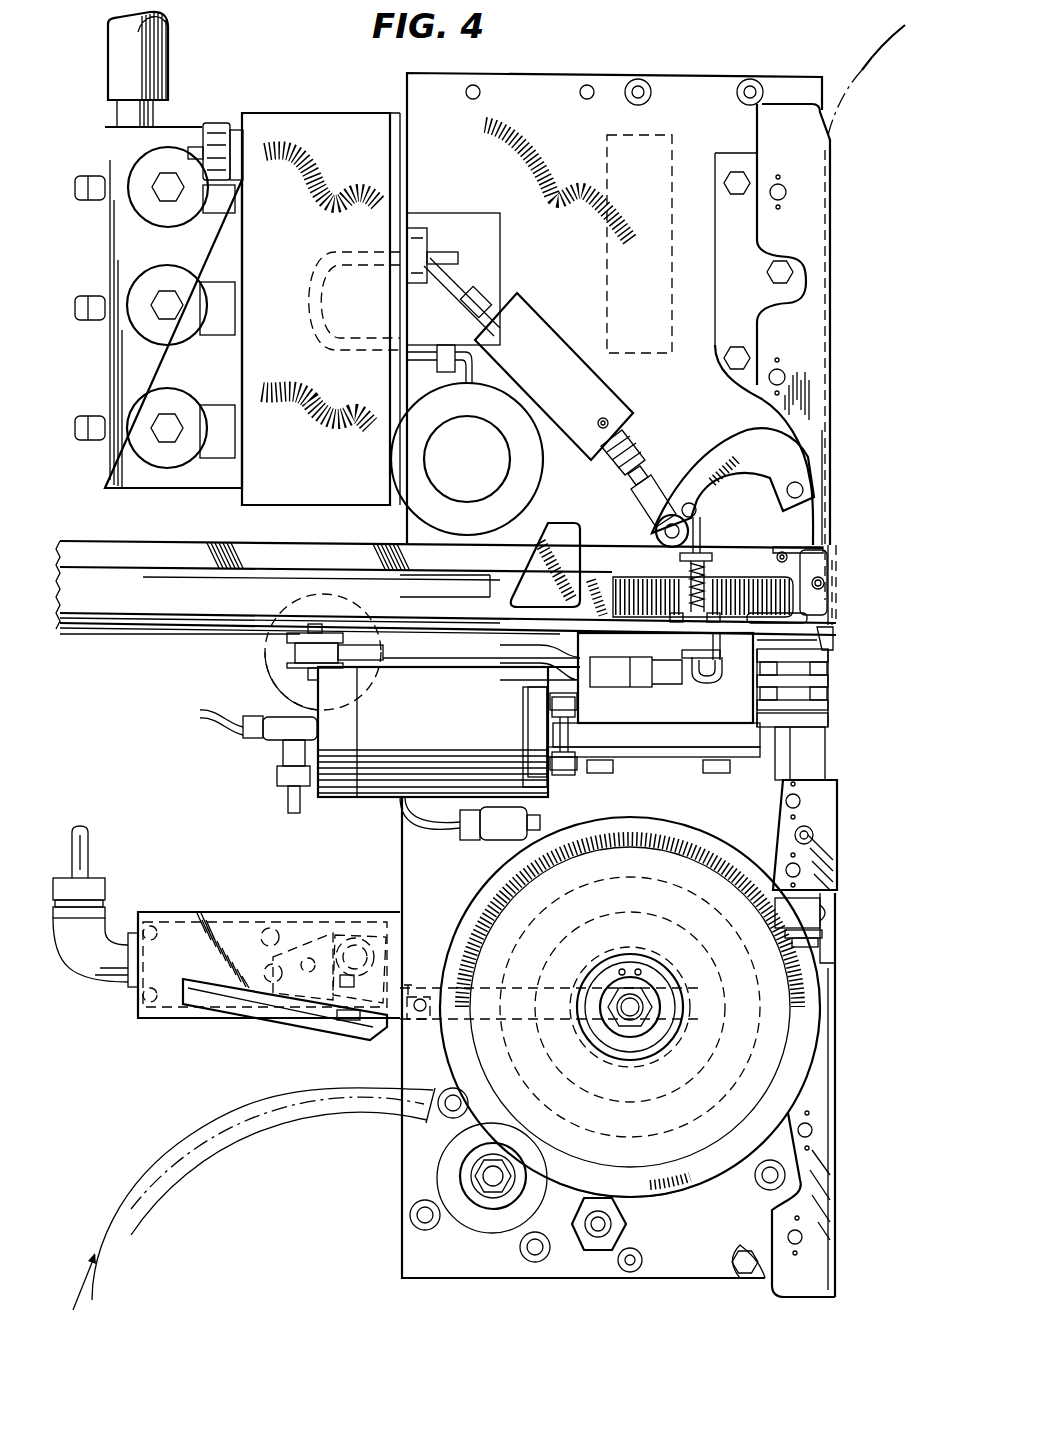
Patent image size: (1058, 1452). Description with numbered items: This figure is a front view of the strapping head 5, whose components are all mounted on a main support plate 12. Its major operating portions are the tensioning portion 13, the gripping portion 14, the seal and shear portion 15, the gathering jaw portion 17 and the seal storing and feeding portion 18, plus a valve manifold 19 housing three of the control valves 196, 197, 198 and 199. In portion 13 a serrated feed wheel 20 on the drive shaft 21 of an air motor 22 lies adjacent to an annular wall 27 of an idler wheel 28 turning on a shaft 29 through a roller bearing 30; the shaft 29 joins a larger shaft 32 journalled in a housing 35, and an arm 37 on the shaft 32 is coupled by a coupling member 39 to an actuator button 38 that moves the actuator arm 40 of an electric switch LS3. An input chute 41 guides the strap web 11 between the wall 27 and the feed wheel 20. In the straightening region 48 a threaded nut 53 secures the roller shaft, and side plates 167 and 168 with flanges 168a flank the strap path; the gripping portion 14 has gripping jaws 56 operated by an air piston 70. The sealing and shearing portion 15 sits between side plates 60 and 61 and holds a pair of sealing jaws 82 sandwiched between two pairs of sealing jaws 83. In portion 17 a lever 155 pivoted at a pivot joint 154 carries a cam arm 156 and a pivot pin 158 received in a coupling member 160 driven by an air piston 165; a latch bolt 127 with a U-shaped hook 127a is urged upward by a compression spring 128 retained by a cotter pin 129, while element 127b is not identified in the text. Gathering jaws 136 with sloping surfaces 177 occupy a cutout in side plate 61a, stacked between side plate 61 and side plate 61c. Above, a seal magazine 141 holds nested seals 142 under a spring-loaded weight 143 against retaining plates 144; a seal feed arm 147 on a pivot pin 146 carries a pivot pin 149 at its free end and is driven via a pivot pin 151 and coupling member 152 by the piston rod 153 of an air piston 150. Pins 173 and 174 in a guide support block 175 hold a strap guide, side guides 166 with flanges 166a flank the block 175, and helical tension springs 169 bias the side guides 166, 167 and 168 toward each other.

The strapping head 5 is at (708, 37).
The strap web 11 is at (864, 68).
The main support plate 12 is at (422, 94).
The strap feed, slack take-up and tensioning portion 13 is at (842, 1075).
The leading strap end gripping portion 14 is at (880, 784).
The strap seal and shear portion 15 is at (888, 692).
The strap gathering jaw portion 17 is at (895, 642).
The strap seal storing and feeding portion 18 is at (880, 591).
The valve manifold 19 is at (115, 163).
The serrated rotary feed wheel 20 is at (480, 1206).
The drive shaft 21 is at (498, 1183).
The air motor 22 is at (437, 1166).
The annular wall 27 is at (578, 1222).
The idler wheel 28 is at (680, 1196).
The shaft 29 is at (680, 1012).
The roller bearing 30 is at (612, 966).
The larger shaft 32 is at (664, 1083).
The housing 35 is at (697, 925).
The radially extending arm 37 is at (428, 985).
The actuator button 38 is at (378, 1040).
The coupling member 39 is at (393, 962).
The actuator arm 40 is at (295, 945).
The input chute 41 is at (262, 1098).
The straightening region 48 is at (875, 877).
The threaded nut 53 is at (812, 836).
The gripping jaws 56 is at (832, 740).
The side plate 60 is at (830, 722).
The side plate 61 is at (473, 638).
The side plate 61a is at (130, 622).
The side plate 61c is at (203, 618).
The air-actuated piston 70 is at (372, 790).
The sealing jaws 82 is at (830, 686).
The sealing jaws 83 is at (830, 668).
The latch bolt 127 is at (690, 680).
The U-shaped hook 127a is at (710, 683).
The rod 127b is at (702, 541).
The compression spring 128 is at (688, 577).
The cotter pin 129 is at (705, 560).
The gathering jaws 136 is at (832, 638).
The seal storage magazine 141 is at (182, 546).
The seal 142 is at (624, 575).
The spring-loaded weight 143 is at (560, 530).
The retaining plates 144 is at (825, 568).
The pivot pin 146 is at (668, 530).
The seal feed arm 147 is at (745, 450).
The pivot pin 149 is at (800, 490).
The air-actuated piston 150 is at (550, 340).
The pivot pin 151 is at (700, 512).
The coupling member 152 is at (668, 480).
The piston rod 153 is at (648, 443).
The pivot joint 154 is at (616, 688).
The lever 155 is at (421, 652).
The cam arm 156 is at (662, 665).
The pivot pin 158 is at (307, 627).
The coupling member 160 is at (290, 664).
The air piston 165 is at (282, 677).
The side guides 166 is at (812, 348).
The inwardly turned flanges 166a is at (836, 606).
The side plates 167 is at (830, 847).
The side plates 168 is at (830, 1053).
The inwardly turned flanges 168a is at (835, 1130).
The helical tension springs 169 is at (780, 200).
The pin 173 is at (733, 185).
The pin 174 is at (733, 360).
The guide support block 175 is at (730, 247).
The sloping surfaces 177 is at (830, 656).
The control valve 196 is at (162, 335).
The control valve 197 is at (400, 458).
The control valve 198 is at (180, 402).
The control valve 199 is at (168, 208).
The electric switch LS3 is at (188, 930).